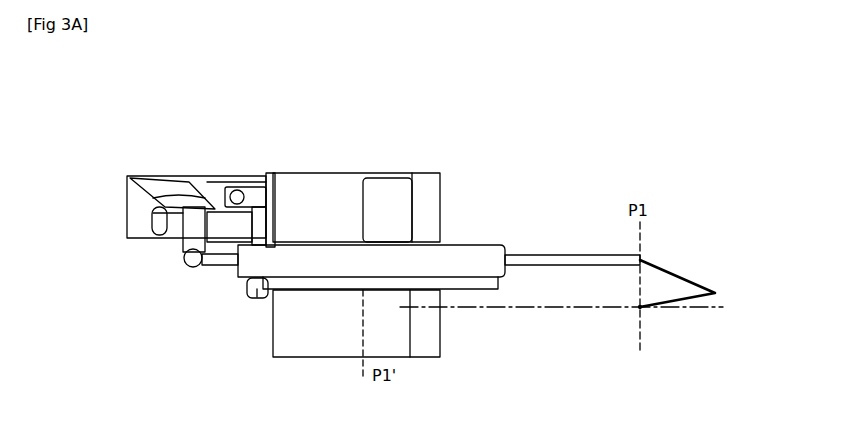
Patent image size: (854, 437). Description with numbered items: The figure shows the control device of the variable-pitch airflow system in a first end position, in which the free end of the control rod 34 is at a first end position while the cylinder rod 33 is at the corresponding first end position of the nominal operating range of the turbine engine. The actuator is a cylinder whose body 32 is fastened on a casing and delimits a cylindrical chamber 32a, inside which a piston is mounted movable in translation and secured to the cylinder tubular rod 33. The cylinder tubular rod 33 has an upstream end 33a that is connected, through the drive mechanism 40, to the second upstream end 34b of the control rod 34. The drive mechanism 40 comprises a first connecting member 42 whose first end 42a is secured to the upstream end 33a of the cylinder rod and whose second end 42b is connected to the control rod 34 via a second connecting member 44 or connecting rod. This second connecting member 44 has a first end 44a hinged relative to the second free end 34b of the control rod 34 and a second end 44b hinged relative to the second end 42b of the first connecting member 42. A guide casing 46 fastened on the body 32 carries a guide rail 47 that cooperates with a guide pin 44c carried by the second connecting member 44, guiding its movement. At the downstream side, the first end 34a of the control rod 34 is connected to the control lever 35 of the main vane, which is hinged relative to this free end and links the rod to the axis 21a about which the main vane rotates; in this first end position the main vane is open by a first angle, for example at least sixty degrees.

The axis of the main vane 21a is at (643, 310).
The body 32 is at (322, 184).
The cylindrical chamber 32a is at (385, 184).
The cylinder tubular rod 33 is at (472, 250).
The upstream end of the cylinder tubular rod 33a is at (238, 276).
The control rod 34 is at (566, 254).
The first end of the control rod 34a is at (643, 259).
The second end of the control rod 34b is at (205, 268).
The control lever 35 is at (690, 272).
The drive mechanism 40 is at (152, 296).
The first connecting member 42 is at (266, 177).
The first end of the first connecting member 42a is at (262, 300).
The second end of the first connecting member 42b is at (237, 182).
The second connecting member 44 is at (178, 237).
The first end of the second connecting member 44a is at (184, 267).
The second end of the second connecting member 44b is at (212, 195).
The guide pin 44c is at (157, 195).
The guide casing 46 is at (127, 211).
The guide rail 47 is at (160, 205).